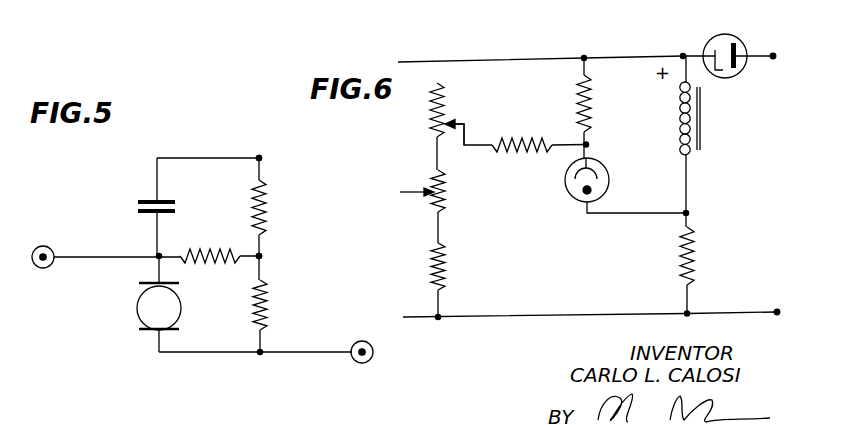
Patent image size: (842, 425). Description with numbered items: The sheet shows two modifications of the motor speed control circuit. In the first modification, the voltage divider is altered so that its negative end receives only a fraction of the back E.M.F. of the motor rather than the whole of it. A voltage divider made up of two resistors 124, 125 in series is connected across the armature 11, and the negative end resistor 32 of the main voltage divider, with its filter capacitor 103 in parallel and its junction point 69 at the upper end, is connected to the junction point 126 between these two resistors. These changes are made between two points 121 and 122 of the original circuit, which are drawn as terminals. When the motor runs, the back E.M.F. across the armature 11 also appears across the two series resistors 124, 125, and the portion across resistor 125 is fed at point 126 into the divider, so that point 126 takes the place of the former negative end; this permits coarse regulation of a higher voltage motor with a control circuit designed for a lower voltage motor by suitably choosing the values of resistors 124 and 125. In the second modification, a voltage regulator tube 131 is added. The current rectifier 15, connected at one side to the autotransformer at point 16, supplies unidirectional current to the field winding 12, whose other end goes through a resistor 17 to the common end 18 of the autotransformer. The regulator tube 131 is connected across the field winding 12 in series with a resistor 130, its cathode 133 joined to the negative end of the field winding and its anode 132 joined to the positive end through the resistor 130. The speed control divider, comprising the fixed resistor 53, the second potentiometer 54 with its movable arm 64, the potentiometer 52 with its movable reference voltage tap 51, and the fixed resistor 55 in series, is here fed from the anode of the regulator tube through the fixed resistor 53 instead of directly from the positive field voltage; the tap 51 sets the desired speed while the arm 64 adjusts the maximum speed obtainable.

In FIG. 5, the point 121 is at (45, 246).
In FIG. 5, the filter capacitor 103 is at (158, 204).
In FIG. 5, the junction point 69 is at (260, 156).
In FIG. 5, the resistor 32 is at (266, 192).
In FIG. 5, the junction point 126 is at (262, 254).
In FIG. 5, the resistor 124 is at (204, 264).
In FIG. 5, the armature 11 is at (134, 310).
In FIG. 5, the resistor 125 is at (264, 301).
In FIG. 5, the point 122 is at (352, 361).
In FIG. 6, the second potentiometer 54 is at (441, 100).
In FIG. 6, the movable arm 64 is at (456, 121).
In FIG. 6, the fixed resistor 53 is at (513, 143).
In FIG. 6, the resistor 130 is at (588, 80).
In FIG. 6, the reference voltage tap 51 is at (406, 193).
In FIG. 6, the potentiometer 52 is at (445, 208).
In FIG. 6, the fixed resistor 55 is at (445, 272).
In FIG. 6, the voltage regulator tube 131 is at (611, 184).
In FIG. 6, the anode 132 is at (592, 165).
In FIG. 6, the cathode 133 is at (583, 190).
In FIG. 6, the field winding 12 is at (701, 122).
In FIG. 6, the current rectifier 15 is at (738, 33).
In FIG. 6, the point 16 is at (773, 56).
In FIG. 6, the resistor 17 is at (693, 243).
In FIG. 6, the common end 18 is at (777, 312).